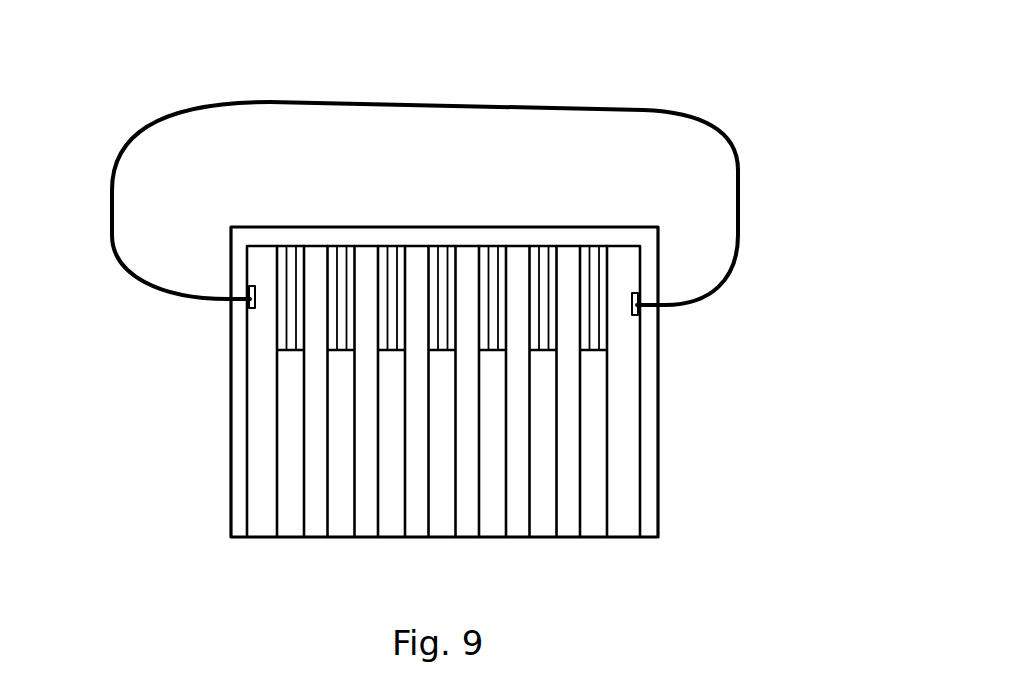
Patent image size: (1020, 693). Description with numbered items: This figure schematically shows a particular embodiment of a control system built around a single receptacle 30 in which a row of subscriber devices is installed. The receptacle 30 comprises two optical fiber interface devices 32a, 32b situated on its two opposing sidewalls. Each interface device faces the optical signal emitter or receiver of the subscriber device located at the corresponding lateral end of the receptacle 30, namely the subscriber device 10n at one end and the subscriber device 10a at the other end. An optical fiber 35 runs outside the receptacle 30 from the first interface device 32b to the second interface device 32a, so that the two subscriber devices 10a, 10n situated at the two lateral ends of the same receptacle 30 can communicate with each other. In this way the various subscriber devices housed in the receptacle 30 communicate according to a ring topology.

The receptacle 30 is at (318, 226).
The subscriber device 10a is at (292, 528).
The subscriber device 10n is at (598, 528).
The optical fiber 35 is at (575, 109).
The optical fiber interface device 32a is at (636, 314).
The optical fiber interface device 32b is at (257, 303).